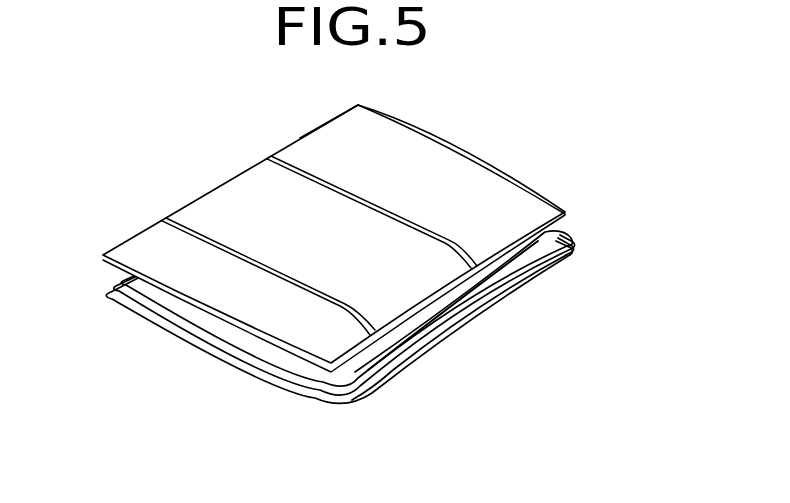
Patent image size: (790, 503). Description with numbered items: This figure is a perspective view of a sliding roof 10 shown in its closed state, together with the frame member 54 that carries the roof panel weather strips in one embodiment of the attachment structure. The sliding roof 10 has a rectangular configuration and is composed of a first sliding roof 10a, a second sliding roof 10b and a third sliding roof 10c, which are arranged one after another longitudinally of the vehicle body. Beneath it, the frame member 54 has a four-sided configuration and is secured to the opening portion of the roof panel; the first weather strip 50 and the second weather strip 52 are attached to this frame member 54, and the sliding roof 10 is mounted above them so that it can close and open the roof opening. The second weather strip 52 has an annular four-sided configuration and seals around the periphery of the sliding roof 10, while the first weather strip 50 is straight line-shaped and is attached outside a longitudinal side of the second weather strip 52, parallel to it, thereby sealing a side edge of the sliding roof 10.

The sliding roof 10 is at (343, 230).
The first sliding roof 10a is at (140, 232).
The second sliding roof 10b is at (240, 175).
The third sliding roof 10c is at (303, 135).
The first weather strip 50 is at (575, 241).
The second weather strip 52 is at (187, 343).
The frame member 54 is at (247, 377).